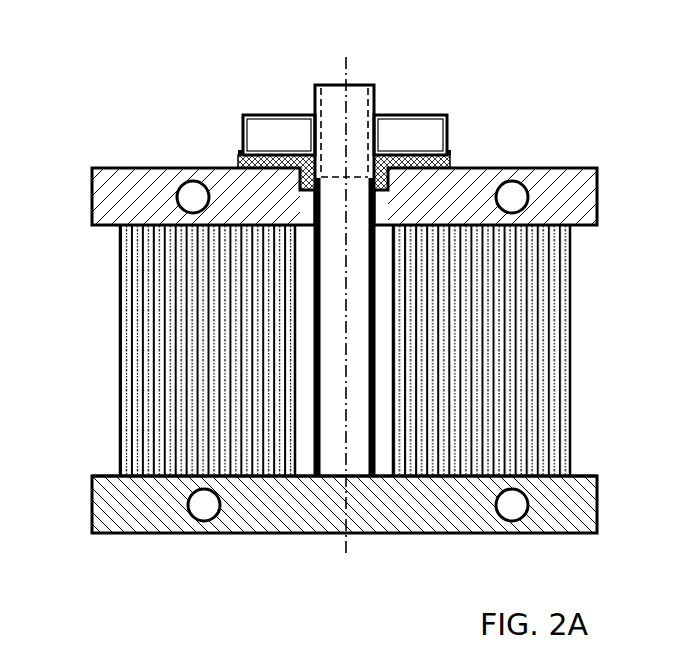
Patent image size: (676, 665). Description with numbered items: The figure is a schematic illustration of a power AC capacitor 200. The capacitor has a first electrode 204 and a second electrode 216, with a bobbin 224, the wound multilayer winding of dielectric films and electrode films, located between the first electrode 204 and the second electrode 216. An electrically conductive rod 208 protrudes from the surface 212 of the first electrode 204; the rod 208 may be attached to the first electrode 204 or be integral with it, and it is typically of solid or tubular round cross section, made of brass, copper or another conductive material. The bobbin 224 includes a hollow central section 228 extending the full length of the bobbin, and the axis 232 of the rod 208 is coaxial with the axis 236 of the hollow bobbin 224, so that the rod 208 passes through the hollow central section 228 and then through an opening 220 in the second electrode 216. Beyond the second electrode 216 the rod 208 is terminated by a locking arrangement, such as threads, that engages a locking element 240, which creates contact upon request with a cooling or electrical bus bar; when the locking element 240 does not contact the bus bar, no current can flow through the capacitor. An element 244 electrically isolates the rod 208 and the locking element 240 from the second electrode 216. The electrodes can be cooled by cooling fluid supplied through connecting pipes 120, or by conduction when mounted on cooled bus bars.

The power AC capacitor 200 is at (496, 108).
The connecting pipes 120 is at (512, 196).
The first electrode 204 is at (92, 502).
The electrically conductive rod 208 is at (360, 85).
The surface of first electrode 212 is at (583, 472).
The second electrode 216 is at (92, 202).
The opening 220 is at (388, 208).
The bobbin 224 is at (570, 265).
The hollow central section 228 is at (303, 462).
The axis of electrically conductive rod 232 is at (346, 553).
The axis of hollow bobbin 236 is at (409, 566).
The locking element 240 is at (425, 115).
The electrically isolating element 244 is at (238, 160).